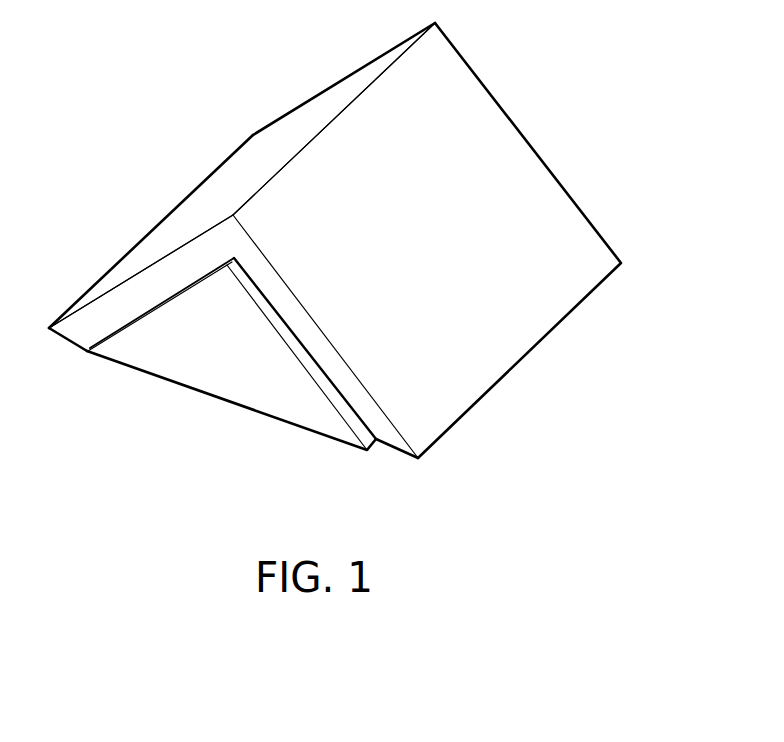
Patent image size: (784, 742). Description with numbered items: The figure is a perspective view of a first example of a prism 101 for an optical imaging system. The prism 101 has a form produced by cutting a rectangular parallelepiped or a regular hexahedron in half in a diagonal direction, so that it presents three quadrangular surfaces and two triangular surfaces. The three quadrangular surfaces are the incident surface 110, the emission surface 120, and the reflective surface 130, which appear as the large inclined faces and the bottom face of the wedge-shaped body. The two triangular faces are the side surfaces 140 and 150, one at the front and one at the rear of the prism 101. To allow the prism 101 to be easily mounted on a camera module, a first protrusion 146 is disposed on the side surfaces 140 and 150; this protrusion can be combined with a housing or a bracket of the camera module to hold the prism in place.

The prism 101 is at (354, 243).
The incident surface 110 is at (227, 185).
The emission surface 120 is at (528, 278).
The reflective surface 130 is at (482, 345).
The side surface 140 is at (82, 327).
The first protrusion 146 is at (200, 362).
The side surface 150 is at (470, 127).